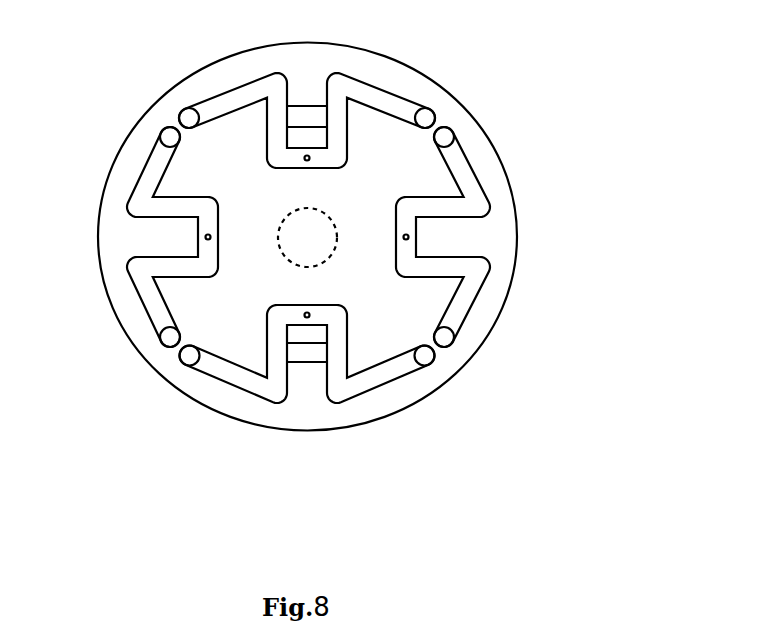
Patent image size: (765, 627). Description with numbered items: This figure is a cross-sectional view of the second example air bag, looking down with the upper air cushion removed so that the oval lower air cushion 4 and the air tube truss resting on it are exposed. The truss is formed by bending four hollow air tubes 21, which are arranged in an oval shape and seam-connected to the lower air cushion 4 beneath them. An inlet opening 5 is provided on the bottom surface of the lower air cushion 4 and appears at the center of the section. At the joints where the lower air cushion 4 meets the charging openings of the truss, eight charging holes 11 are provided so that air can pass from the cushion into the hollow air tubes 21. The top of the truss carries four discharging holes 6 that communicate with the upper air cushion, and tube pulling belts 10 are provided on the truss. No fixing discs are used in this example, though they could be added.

The lower air cushion 4 is at (364, 247).
The inlet opening 5 is at (450, 289).
The discharging hole 6 is at (507, 194).
The tube pulling belt 10 is at (167, 276).
The charging hole 11 is at (522, 79).
The hollow air tube 21 is at (367, 84).